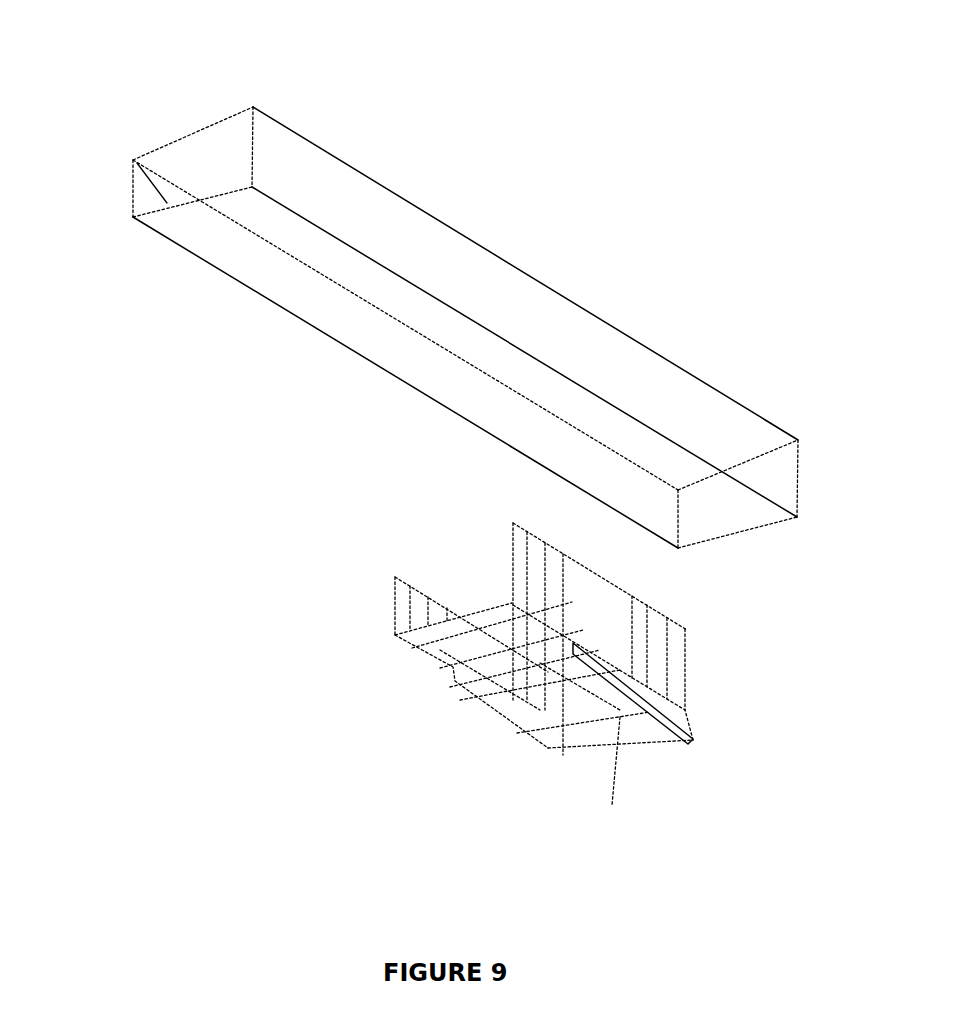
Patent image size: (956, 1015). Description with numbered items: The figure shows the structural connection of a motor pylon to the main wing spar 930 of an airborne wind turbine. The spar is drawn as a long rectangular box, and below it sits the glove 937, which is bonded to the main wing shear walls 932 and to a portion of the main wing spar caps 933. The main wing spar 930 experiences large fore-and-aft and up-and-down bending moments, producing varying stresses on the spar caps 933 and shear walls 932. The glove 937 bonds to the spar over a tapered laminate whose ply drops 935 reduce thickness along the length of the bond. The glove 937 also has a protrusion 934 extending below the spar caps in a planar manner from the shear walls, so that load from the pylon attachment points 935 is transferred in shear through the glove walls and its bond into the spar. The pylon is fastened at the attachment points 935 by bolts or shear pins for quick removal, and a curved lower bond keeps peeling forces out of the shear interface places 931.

The main wing spar 930 is at (280, 113).
The shear interface places 931 is at (505, 532).
The main wing shear walls 932 is at (243, 168).
The main wing spar caps 933 is at (217, 130).
The protrusion 934 is at (510, 730).
The pylon attachment points 935 is at (540, 533).
The glove 937 is at (385, 783).